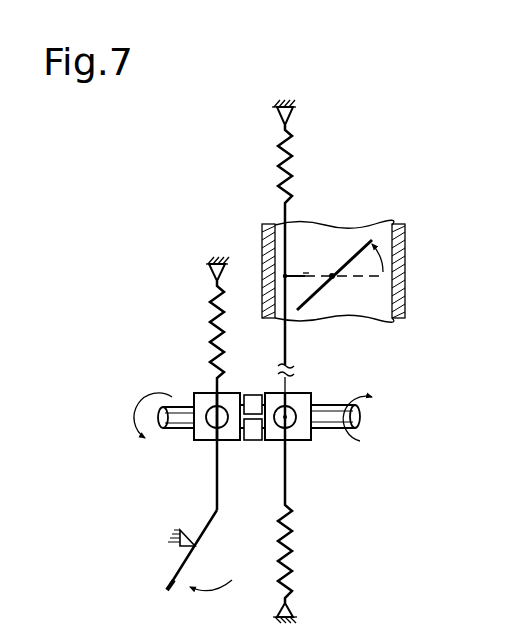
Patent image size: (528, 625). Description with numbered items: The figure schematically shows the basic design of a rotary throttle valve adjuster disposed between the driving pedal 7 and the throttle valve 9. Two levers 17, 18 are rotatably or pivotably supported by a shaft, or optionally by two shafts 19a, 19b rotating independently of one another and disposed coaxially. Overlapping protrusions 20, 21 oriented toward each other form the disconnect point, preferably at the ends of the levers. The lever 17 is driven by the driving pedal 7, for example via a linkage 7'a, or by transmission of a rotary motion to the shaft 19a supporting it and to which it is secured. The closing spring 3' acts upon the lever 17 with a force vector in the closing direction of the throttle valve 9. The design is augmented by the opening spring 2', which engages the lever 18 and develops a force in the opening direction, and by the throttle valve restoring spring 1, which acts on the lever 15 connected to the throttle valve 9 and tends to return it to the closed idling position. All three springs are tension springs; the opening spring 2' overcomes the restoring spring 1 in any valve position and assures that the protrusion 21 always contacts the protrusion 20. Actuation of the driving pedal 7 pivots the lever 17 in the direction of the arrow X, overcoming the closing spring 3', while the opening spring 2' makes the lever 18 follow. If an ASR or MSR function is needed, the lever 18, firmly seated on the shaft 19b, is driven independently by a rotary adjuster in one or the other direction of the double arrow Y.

The throttle valve restoring spring 1 is at (290, 160).
The throttle valve 9 is at (347, 262).
The lever 15 is at (306, 274).
The closing spring 3' is at (184, 325).
The linkage 7'a is at (198, 451).
The driving pedal 7 is at (206, 550).
The lever 17 is at (200, 442).
The lever 18 is at (303, 440).
The protrusion 20 is at (253, 440).
The protrusion 21 is at (252, 398).
The shaft 19a is at (186, 410).
The shaft 19b is at (325, 412).
The arrow X is at (148, 436).
The double arrow Y is at (374, 434).
The opening spring 2' is at (306, 531).